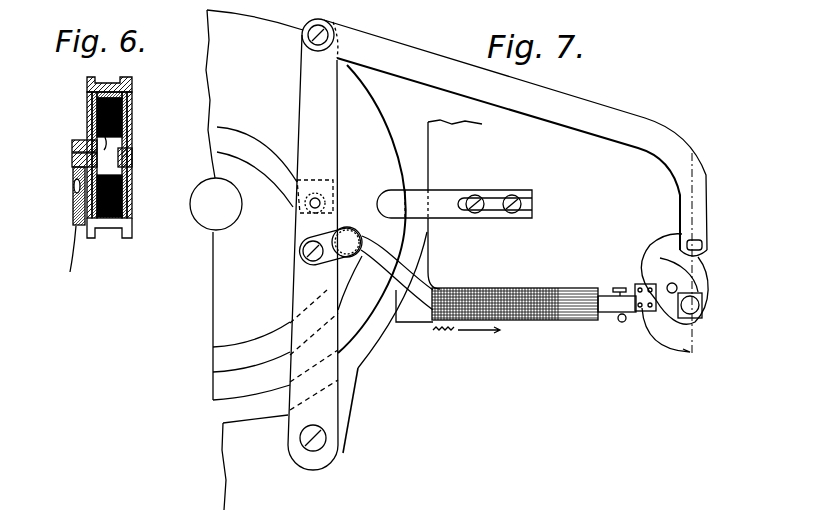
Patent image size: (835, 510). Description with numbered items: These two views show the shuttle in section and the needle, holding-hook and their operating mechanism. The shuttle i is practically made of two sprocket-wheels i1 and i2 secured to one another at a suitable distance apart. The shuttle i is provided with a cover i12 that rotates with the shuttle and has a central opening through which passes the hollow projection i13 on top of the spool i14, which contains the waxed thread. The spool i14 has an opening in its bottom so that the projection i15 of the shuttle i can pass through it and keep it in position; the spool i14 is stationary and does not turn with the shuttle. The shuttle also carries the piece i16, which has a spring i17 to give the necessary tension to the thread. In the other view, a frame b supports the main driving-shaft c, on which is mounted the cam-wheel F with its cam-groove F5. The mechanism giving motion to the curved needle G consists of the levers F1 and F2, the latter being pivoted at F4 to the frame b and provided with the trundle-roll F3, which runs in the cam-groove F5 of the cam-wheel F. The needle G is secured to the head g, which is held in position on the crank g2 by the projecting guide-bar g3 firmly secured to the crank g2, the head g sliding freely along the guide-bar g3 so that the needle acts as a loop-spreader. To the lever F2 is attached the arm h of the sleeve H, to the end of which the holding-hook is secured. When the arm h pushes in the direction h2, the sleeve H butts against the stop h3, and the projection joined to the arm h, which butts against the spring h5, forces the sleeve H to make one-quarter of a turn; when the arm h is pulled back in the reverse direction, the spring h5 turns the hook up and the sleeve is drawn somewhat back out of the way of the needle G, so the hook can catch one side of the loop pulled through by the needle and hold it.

In FIG. 6, the shuttle i is at (128, 187).
In FIG. 6, the sprocket-wheel i1 is at (131, 204).
In FIG. 6, the sprocket-wheel i2 is at (88, 84).
In FIG. 6, the cover i12 is at (93, 124).
In FIG. 6, the hollow projection i13 is at (80, 158).
In FIG. 6, the spool i14 is at (128, 120).
In FIG. 6, the projection of the shuttle i15 is at (128, 155).
In FIG. 6, the piece i16 is at (80, 224).
In FIG. 6, the spring i17 is at (78, 195).
In FIG. 7, the cam-wheel F is at (306, 260).
In FIG. 7, the lever F1 is at (504, 187).
In FIG. 7, the lever F2 is at (313, 252).
In FIG. 7, the trundle-roll F3 is at (320, 202).
In FIG. 7, the pivot F4 is at (327, 438).
In FIG. 7, the cam-groove F5 is at (275, 361).
In FIG. 7, the frame b is at (344, 397).
In FIG. 7, the main driving-shaft c is at (216, 204).
In FIG. 7, the arm h is at (415, 287).
In FIG. 7, the sleeve H is at (529, 298).
In FIG. 7, the direction of push h2 is at (466, 340).
In FIG. 7, the stop h3 is at (620, 322).
In FIG. 7, the spring h5 is at (495, 298).
In FIG. 7, the curved needle G is at (672, 348).
In FIG. 7, the head g is at (703, 297).
In FIG. 7, the crank g2 is at (703, 246).
In FIG. 7, the guide-bar g3 is at (678, 287).